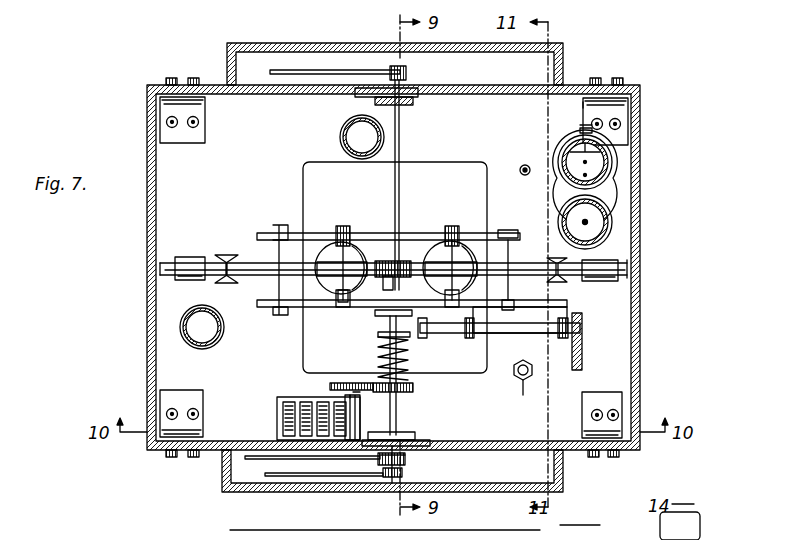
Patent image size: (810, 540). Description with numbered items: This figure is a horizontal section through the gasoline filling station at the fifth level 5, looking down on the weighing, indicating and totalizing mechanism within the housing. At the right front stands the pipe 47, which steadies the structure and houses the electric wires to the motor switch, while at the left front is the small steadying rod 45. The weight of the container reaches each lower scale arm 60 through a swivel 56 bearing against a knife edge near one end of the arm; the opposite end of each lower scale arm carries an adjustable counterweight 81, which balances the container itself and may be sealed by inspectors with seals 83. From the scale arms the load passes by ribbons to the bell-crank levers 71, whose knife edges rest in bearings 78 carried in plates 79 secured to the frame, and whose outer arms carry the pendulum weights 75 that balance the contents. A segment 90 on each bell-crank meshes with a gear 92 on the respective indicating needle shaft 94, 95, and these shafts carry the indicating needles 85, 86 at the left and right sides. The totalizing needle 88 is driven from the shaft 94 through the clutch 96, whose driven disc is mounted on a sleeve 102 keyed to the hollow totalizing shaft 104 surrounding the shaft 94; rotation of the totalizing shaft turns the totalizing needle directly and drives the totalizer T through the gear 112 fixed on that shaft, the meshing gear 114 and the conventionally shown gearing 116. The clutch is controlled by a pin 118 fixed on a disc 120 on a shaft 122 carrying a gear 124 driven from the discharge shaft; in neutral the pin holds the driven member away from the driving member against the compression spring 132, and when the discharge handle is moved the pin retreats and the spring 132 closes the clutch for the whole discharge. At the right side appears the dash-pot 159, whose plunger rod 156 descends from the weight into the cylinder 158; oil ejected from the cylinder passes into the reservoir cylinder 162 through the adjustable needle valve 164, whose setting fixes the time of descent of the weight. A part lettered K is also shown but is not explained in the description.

The fifth level 5 is at (146, 449).
The rod 45 is at (525, 385).
The pipe 47 is at (526, 165).
The swivel 56 is at (226, 256).
The lower scale arm 60 is at (262, 252).
The bell-crank lever 71 is at (400, 276).
The weight 75 is at (337, 262).
The bearing 78 is at (343, 262).
The plate 79 is at (305, 170).
The counterweight 81 is at (178, 283).
The seal 83 is at (190, 257).
The indicating needle 85 is at (268, 478).
The indicating needle 86 is at (299, 75).
The totalizing needle 88 is at (330, 462).
The segment 90 is at (342, 300).
The gear 92 is at (400, 262).
The indicating needle shaft 94 is at (430, 320).
The indicating needle shaft 95 is at (401, 138).
The clutch 96 is at (385, 318).
The sleeve 102 is at (330, 480).
The hollow totalizing shaft 104 is at (390, 445).
The gear 112 is at (398, 410).
The gear 114 is at (330, 387).
The gearing 116 is at (345, 402).
The pin 118 is at (412, 378).
The disc 120 is at (410, 345).
The shaft 122 is at (505, 386).
The gear 124 is at (598, 342).
The compression spring 132 is at (376, 332).
The plunger rod 156 is at (600, 195).
The cylinder 158 is at (587, 222).
The dash-pot 159 is at (612, 168).
The reservoir cylinder 162 is at (604, 152).
The adjustable needle valve 164 is at (616, 97).
The key K is at (310, 307).
The totalizer T is at (280, 424).